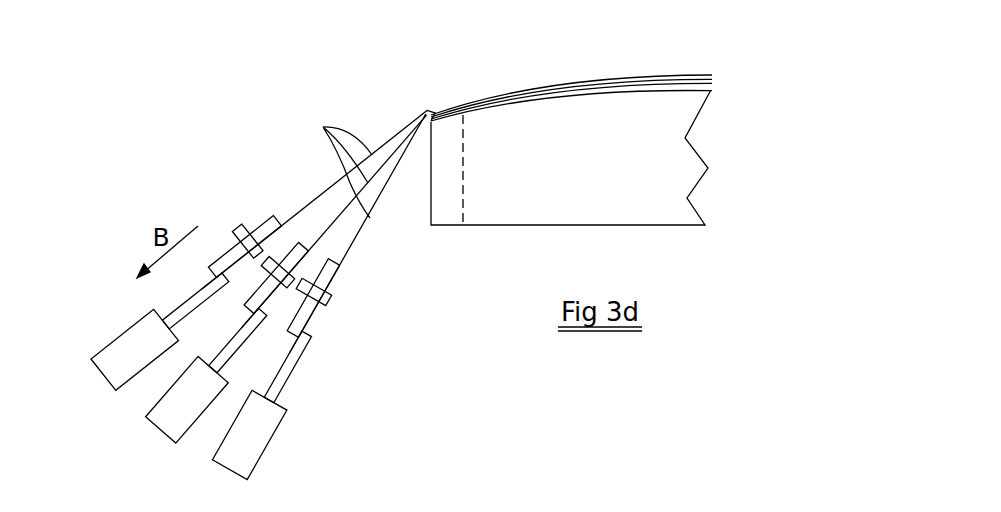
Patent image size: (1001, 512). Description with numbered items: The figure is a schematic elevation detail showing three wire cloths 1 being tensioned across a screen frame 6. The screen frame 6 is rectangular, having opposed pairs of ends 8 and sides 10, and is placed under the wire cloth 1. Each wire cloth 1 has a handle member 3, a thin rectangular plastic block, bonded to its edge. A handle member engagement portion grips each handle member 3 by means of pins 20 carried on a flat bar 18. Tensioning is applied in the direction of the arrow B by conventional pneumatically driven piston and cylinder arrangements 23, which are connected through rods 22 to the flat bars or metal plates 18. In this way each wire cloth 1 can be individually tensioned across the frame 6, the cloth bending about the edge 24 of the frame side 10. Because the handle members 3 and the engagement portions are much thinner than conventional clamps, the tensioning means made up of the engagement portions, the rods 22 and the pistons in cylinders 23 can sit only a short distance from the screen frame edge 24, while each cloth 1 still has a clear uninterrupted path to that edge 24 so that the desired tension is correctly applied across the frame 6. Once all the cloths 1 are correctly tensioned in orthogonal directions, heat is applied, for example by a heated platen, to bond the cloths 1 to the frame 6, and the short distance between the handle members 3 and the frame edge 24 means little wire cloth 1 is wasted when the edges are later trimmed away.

The wire cloth 1 is at (336, 166).
The handle member 3 is at (262, 228).
The screen frame 6 is at (647, 105).
The end 8 is at (606, 135).
The side 10 is at (447, 208).
The flat bar 18 is at (313, 325).
The pin 20 is at (233, 227).
The rod 22 is at (280, 382).
The piston and cylinder arrangement 23 is at (133, 344).
The screen frame edge 24 is at (430, 117).